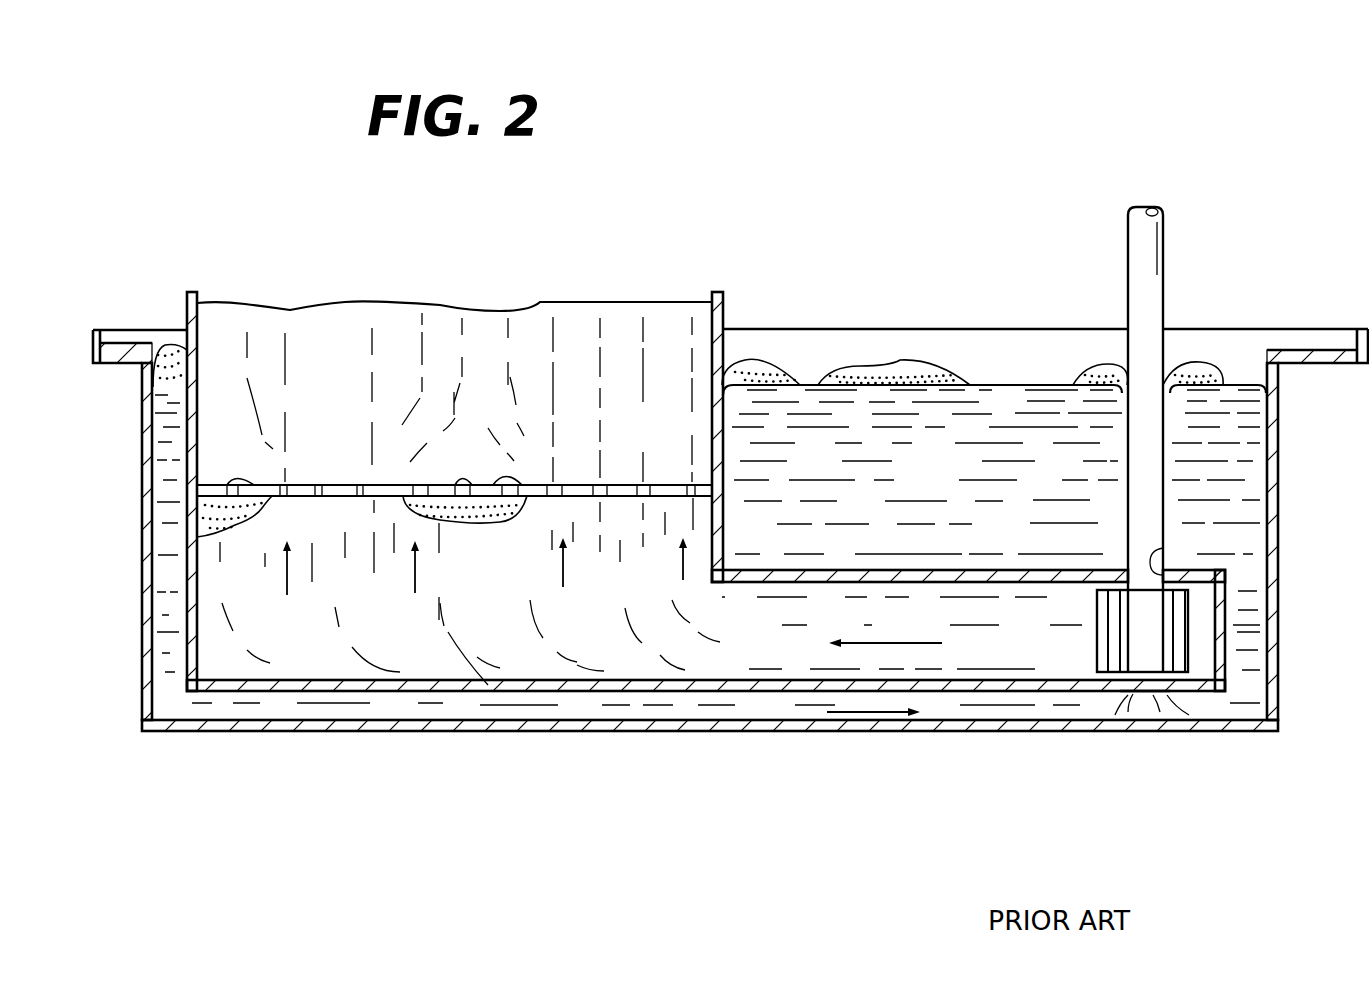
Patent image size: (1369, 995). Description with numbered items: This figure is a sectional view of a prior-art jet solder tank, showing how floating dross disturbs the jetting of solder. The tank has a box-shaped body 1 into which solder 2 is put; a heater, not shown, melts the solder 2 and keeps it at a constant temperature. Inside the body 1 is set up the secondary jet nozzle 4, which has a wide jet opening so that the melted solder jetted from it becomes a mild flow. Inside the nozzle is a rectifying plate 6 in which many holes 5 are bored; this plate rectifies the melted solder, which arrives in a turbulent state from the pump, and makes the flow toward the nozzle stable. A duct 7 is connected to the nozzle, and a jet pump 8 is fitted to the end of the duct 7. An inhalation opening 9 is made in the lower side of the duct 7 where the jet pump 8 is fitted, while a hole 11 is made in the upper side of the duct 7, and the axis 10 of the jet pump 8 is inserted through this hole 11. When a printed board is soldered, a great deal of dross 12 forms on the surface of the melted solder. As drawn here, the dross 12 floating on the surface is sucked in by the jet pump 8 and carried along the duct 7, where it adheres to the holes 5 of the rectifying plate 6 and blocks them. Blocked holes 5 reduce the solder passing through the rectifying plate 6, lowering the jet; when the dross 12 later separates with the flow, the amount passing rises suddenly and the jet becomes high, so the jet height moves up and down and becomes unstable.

The box-shaped body 1 is at (1278, 453).
The solder 2 is at (1003, 412).
The secondary jet nozzle 4 is at (713, 290).
The holes 5 is at (379, 485).
The rectifying plate 6 is at (630, 485).
The duct 7 is at (1063, 567).
The jet pump 8 is at (1187, 647).
The inhalation opening 9 is at (1142, 683).
The axis 10 is at (1163, 250).
The hole 11 is at (1163, 548).
The dross 12 is at (163, 345).